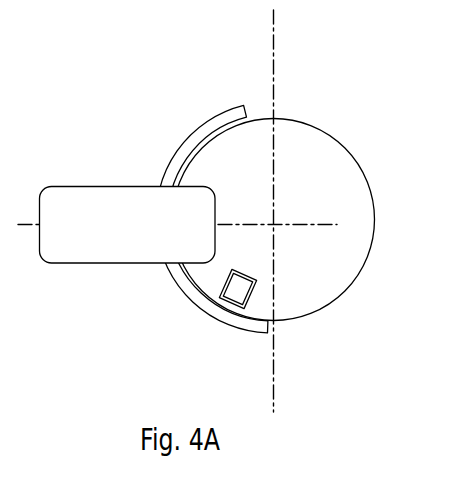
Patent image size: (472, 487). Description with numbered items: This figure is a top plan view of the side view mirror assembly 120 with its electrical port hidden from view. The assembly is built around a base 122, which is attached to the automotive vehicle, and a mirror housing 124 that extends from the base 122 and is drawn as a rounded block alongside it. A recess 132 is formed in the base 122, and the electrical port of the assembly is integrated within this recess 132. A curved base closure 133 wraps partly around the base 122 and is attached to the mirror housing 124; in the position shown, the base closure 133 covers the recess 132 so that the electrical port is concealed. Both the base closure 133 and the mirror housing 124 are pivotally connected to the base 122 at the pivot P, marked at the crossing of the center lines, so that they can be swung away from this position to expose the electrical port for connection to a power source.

The side view mirror assembly 120 is at (322, 80).
The base 122 is at (353, 157).
The mirror housing 124 is at (97, 187).
The recess 132 is at (229, 306).
The base closure 133 is at (240, 333).
The pivot P is at (274, 224).